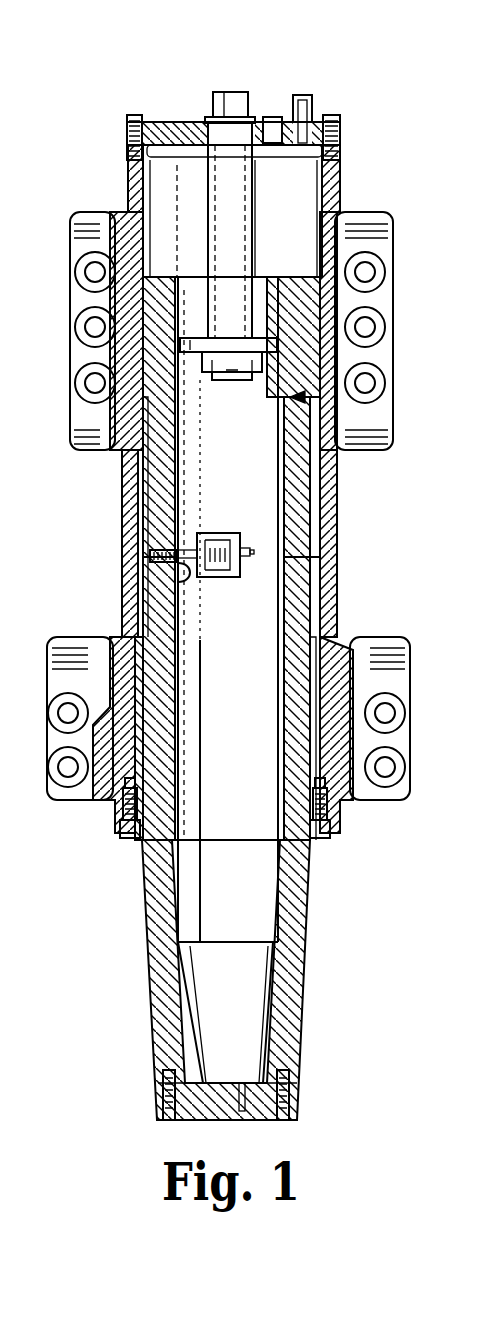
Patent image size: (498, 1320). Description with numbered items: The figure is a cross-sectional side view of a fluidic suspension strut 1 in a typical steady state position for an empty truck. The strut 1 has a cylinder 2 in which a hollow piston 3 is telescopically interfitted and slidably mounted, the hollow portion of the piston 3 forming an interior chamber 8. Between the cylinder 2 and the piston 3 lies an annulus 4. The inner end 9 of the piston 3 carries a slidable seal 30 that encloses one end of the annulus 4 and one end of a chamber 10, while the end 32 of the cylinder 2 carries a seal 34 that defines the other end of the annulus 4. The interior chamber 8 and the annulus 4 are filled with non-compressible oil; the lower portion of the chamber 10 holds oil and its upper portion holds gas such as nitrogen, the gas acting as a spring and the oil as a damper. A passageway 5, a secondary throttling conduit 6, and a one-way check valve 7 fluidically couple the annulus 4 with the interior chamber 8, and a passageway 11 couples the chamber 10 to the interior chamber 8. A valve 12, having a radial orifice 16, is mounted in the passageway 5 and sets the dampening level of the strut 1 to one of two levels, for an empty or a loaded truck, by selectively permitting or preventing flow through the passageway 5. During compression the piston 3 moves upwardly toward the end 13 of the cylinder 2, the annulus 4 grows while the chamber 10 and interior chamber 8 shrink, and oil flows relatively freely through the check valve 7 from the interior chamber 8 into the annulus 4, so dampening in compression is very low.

The suspension strut 1 is at (232, 570).
The cylinder 2 is at (333, 652).
The hollow piston 3 is at (303, 1015).
The annulus 4 is at (142, 497).
The passageway 5 is at (152, 552).
The secondary throttling conduit 6 is at (307, 557).
The one-way check valve 7 is at (322, 398).
The interior chamber 8 is at (263, 920).
The inner end 9 is at (292, 267).
The chamber 10 is at (302, 180).
The passageway 11 is at (203, 278).
The valve 12 is at (220, 537).
The end 13 is at (179, 122).
The radial orifice 16 is at (187, 573).
The slidable seal 30 is at (302, 357).
The end 32 is at (337, 767).
The seal 34 is at (135, 748).